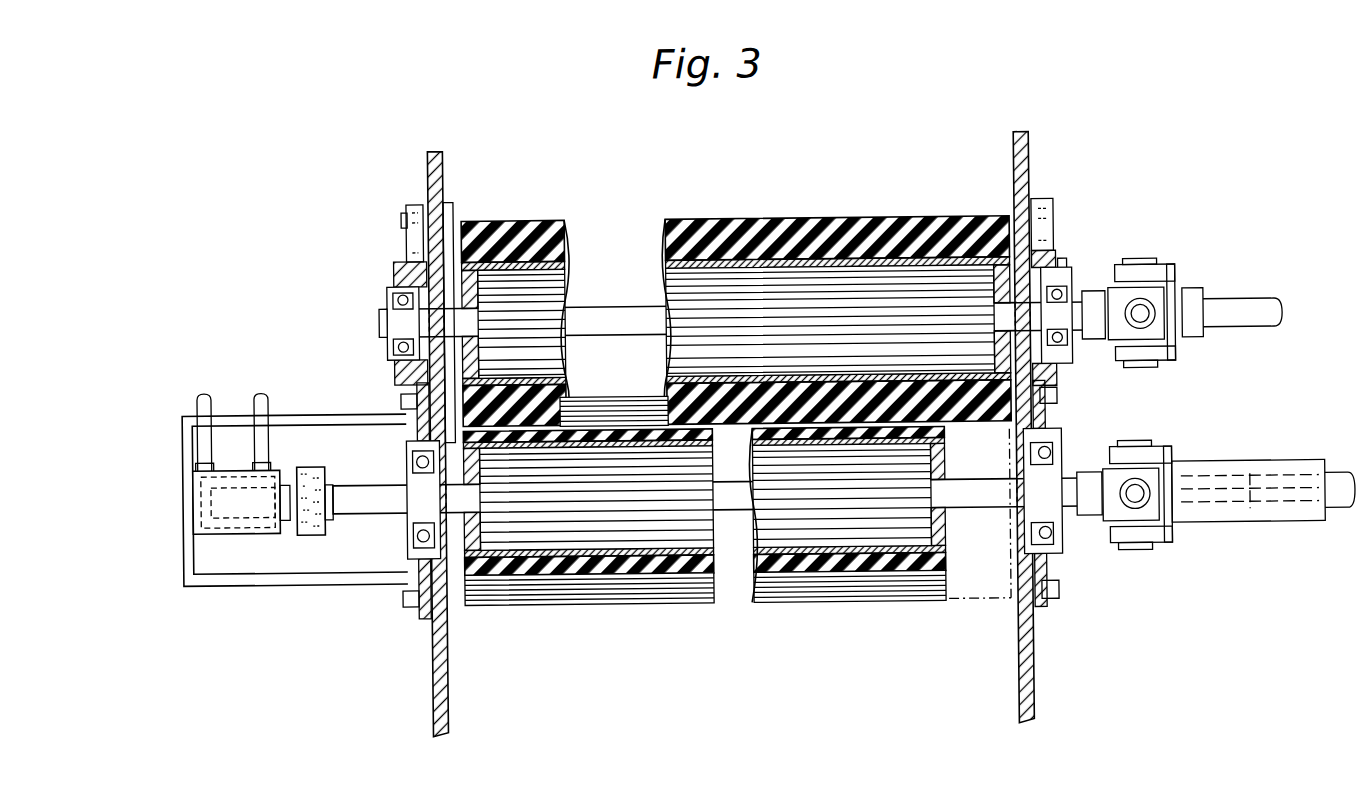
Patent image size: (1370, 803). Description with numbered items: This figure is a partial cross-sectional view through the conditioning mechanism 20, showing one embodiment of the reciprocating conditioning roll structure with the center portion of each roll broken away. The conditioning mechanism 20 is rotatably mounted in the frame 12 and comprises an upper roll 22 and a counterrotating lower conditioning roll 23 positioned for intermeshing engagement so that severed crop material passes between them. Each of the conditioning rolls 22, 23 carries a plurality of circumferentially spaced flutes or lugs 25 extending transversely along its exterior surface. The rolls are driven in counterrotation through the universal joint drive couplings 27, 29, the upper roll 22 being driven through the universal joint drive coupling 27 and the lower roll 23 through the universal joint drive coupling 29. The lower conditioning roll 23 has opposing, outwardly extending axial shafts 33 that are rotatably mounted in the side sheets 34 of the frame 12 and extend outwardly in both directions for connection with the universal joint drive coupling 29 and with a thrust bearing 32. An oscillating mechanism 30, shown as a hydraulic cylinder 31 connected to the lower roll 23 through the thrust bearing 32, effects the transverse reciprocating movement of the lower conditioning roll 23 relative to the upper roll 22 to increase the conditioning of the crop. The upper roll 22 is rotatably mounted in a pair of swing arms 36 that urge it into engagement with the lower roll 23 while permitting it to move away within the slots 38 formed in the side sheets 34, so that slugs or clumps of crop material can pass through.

The frame 12 is at (430, 175).
The conditioning mechanism 20 is at (552, 150).
The upper roll 22 is at (720, 218).
The lower conditioning roll 23 is at (603, 603).
The flutes or lugs 25 is at (882, 220).
The universal joint drive coupling 27 is at (1162, 270).
The universal joint drive coupling 29 is at (1150, 550).
The oscillating mechanism 30 is at (302, 338).
The hydraulic cylinder 31 is at (230, 528).
The thrust bearing 32 is at (313, 463).
The axial shafts 33 is at (369, 506).
The side sheets 34 is at (429, 679).
The swing arms 36 is at (412, 240).
The slots 38 is at (436, 254).